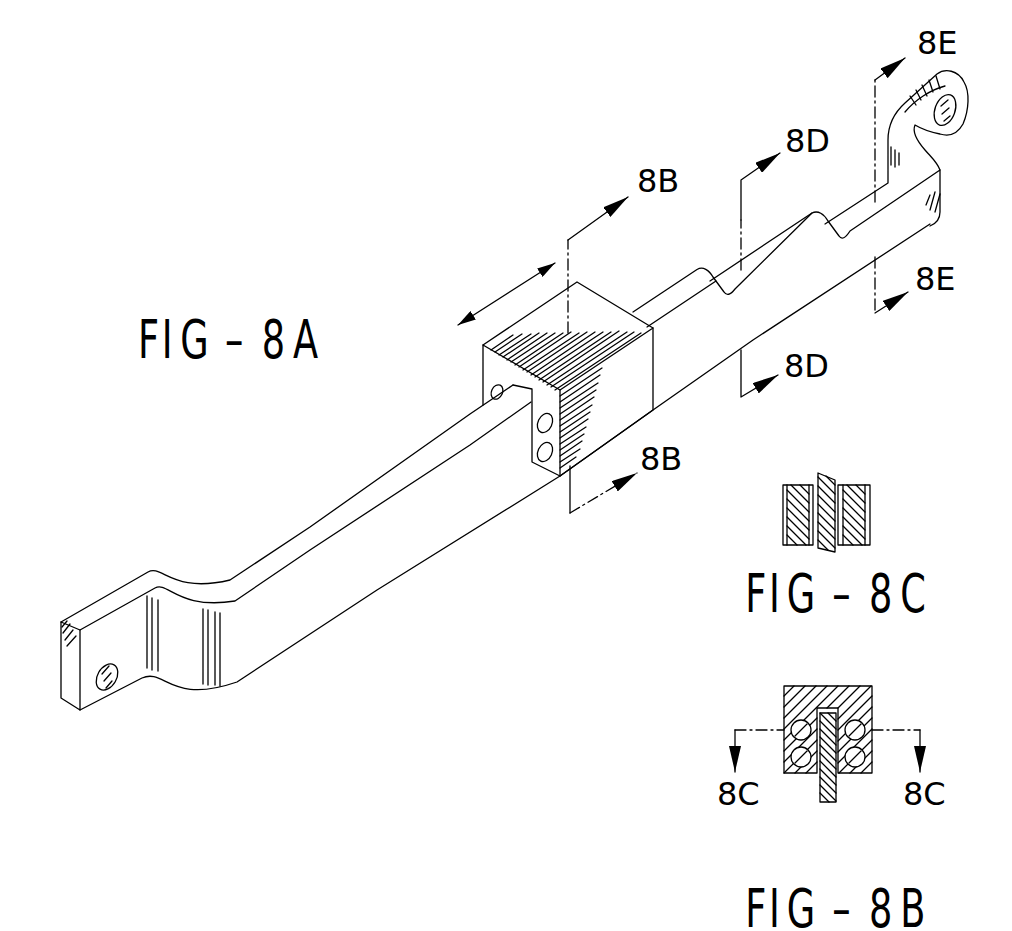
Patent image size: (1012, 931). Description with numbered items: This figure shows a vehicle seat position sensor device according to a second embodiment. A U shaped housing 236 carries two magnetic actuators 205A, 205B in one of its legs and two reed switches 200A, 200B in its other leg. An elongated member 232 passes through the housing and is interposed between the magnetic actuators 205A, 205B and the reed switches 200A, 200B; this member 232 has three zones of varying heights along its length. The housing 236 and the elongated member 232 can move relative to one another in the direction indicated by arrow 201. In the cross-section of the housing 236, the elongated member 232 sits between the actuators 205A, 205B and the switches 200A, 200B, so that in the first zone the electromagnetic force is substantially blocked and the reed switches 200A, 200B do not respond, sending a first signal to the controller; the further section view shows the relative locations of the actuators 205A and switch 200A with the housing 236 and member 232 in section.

In FIG. 8A, the arrow 201 is at (506, 297).
In FIG. 8A, the elongated member 232 is at (378, 604).
In FIG. 8C, the elongated member 232 is at (838, 480).
In FIG. 8B, the elongated member 232 is at (831, 804).
In FIG. 8A, the U shaped housing 236 is at (648, 399).
In FIG. 8C, the U shaped housing 236 is at (781, 524).
In FIG. 8B, the U shaped housing 236 is at (841, 684).
In FIG. 8A, the reed switch 200A is at (544, 433).
In FIG. 8C, the reed switch 200A is at (856, 512).
In FIG. 8B, the reed switch 200A is at (866, 723).
In FIG. 8A, the reed switch 200B is at (545, 462).
In FIG. 8B, the reed switch 200B is at (854, 763).
In FIG. 8A, the magnetic actuator 205A is at (492, 398).
In FIG. 8C, the magnetic actuator 205A is at (800, 514).
In FIG. 8B, the magnetic actuator 205A is at (791, 725).
In FIG. 8B, the magnetic actuator 205B is at (800, 757).